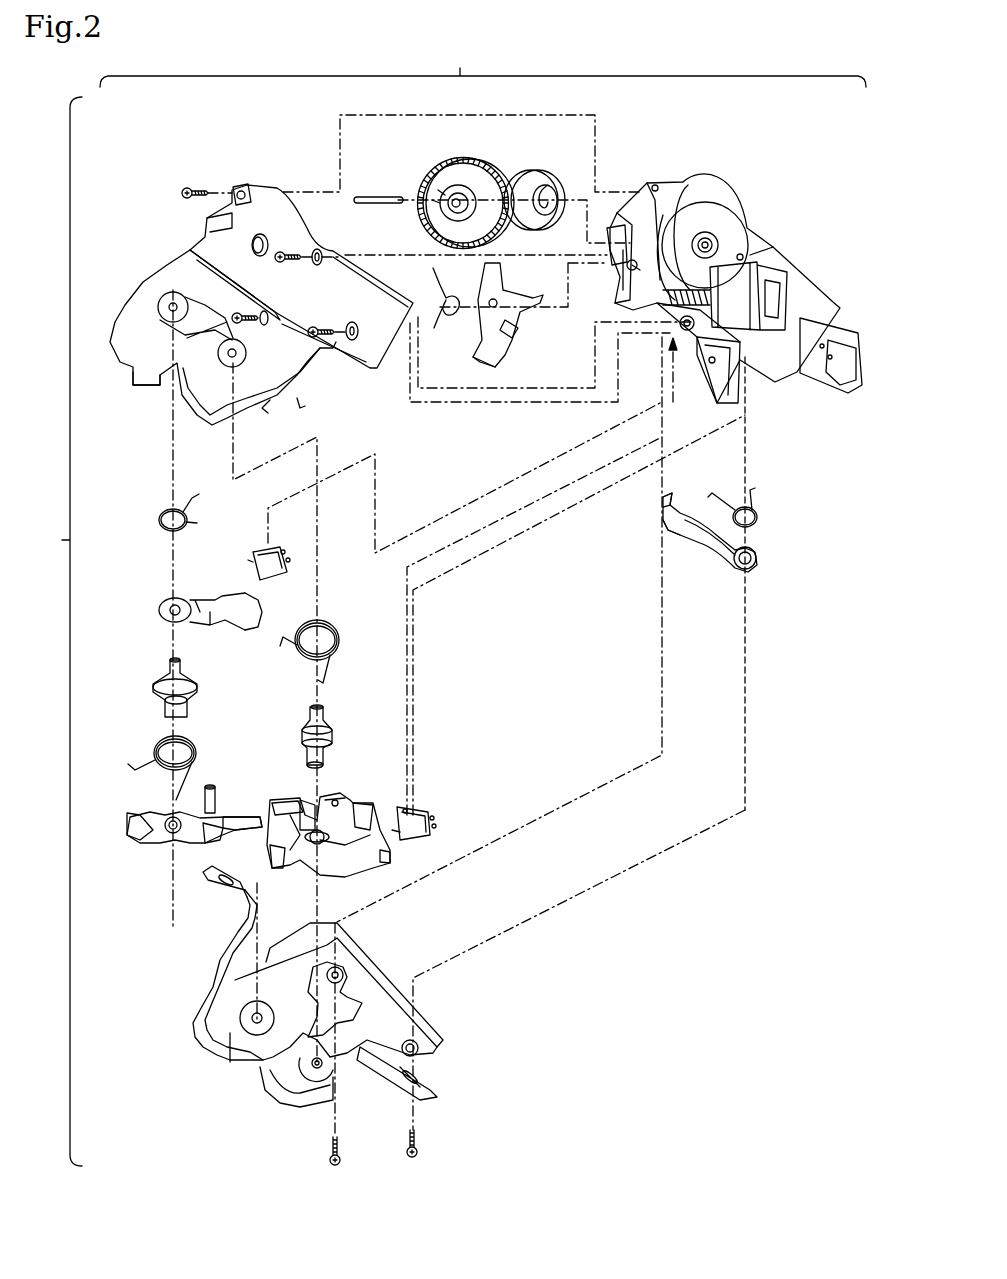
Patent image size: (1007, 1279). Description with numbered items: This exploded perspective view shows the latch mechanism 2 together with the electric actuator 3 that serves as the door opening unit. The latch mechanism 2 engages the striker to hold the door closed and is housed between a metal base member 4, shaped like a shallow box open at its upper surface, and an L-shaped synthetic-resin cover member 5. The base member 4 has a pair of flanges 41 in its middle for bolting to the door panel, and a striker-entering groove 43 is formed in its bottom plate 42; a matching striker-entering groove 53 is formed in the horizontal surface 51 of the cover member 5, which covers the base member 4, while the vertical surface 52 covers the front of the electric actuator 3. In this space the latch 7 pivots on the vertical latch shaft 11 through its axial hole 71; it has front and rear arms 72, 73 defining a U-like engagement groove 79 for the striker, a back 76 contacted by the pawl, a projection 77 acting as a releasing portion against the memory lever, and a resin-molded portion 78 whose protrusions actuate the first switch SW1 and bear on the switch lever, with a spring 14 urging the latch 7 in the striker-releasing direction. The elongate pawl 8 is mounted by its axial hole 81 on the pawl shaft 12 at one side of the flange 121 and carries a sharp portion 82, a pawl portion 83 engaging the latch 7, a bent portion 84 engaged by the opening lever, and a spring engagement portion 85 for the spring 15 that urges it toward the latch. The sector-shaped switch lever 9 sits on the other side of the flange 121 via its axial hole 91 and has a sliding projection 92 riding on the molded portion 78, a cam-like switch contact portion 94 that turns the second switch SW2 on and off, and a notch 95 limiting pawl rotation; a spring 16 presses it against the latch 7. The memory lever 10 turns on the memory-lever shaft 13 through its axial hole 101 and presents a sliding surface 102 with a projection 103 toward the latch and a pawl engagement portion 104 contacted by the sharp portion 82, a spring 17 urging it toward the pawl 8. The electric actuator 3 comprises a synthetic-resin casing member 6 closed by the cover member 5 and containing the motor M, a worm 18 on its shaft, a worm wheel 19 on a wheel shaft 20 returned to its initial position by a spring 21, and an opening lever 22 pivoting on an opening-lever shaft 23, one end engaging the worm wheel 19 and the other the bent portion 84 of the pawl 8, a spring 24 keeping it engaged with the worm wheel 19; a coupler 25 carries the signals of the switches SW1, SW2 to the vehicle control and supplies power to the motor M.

The latch mechanism 2 is at (64, 631).
The electric actuator 3 is at (483, 64).
The base member 4 is at (433, 1023).
The flanges 41 is at (258, 887).
The bottom plate 42 is at (230, 1062).
The striker-entering groove 43 is at (262, 1085).
The cover member 5 is at (149, 269).
The horizontal surface 51 is at (140, 305).
The vertical surface 52 is at (282, 188).
The striker-entering groove 53 is at (150, 378).
The casing member 6 is at (746, 204).
The motor M is at (750, 273).
The worm 18 is at (675, 186).
The opening-lever shaft 23 is at (628, 277).
The coupler 25 is at (812, 385).
The memory-lever shaft 13 is at (748, 390).
The worm wheel 19 is at (457, 162).
The wheel shaft 20 is at (380, 193).
The spring 21 is at (540, 170).
The opening lever 22 is at (527, 327).
The spring 24 is at (452, 317).
The latch 7 is at (361, 783).
The axial hole 71 is at (308, 850).
The front arm 72 is at (280, 798).
The rear arm 73 is at (337, 797).
The back 76 is at (377, 810).
The projection 77 is at (390, 848).
The resin-molded portion 78 is at (282, 843).
The engagement groove 79 is at (307, 797).
The pawl 8 is at (158, 810).
The axial hole 81 is at (170, 830).
The sharp portion 82 is at (257, 827).
The pawl portion 83 is at (217, 840).
The bent portion 84 is at (212, 785).
The spring engagement portion 85 is at (133, 833).
The switch lever 9 is at (168, 586).
The axial hole 91 is at (159, 607).
The sliding projection 92 is at (258, 627).
The switch contact portion 94 is at (258, 603).
The notch 95 is at (217, 600).
The memory lever 10 is at (726, 570).
The axial hole 101 is at (757, 553).
The sliding surface 102 is at (702, 542).
The projection 103 is at (670, 530).
The pawl engagement portion 104 is at (663, 505).
The latch shaft 11 is at (330, 727).
The pawl shaft 12 is at (158, 660).
The flange 121 is at (155, 682).
The spring 14 is at (333, 620).
The spring 15 is at (157, 747).
The spring 16 is at (170, 510).
The spring 17 is at (757, 505).
The first switch SW1 is at (417, 808).
The second switch SW2 is at (253, 557).